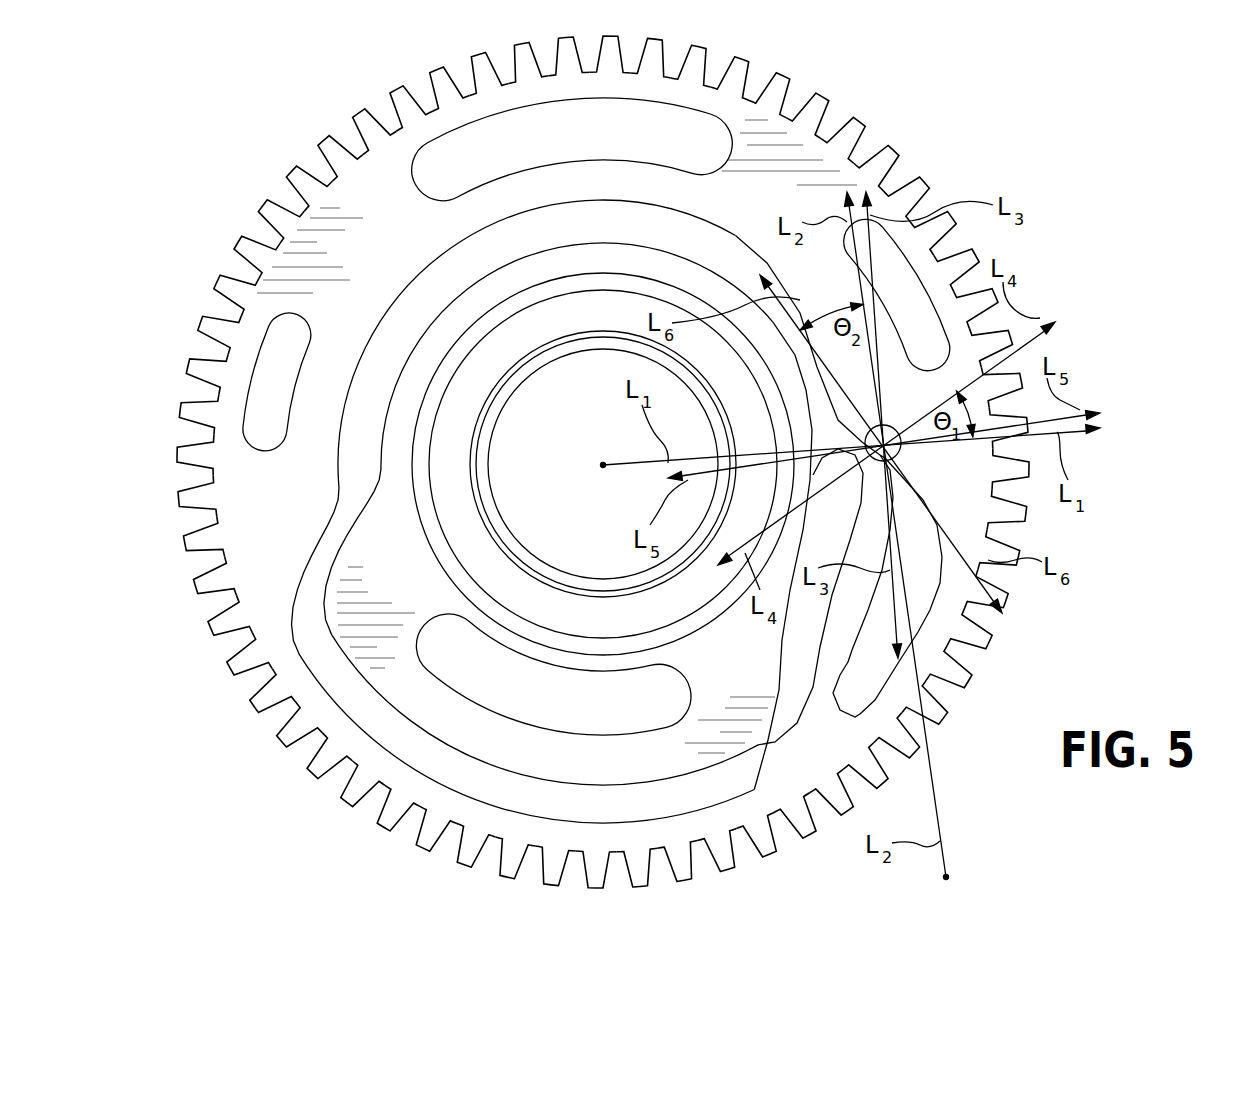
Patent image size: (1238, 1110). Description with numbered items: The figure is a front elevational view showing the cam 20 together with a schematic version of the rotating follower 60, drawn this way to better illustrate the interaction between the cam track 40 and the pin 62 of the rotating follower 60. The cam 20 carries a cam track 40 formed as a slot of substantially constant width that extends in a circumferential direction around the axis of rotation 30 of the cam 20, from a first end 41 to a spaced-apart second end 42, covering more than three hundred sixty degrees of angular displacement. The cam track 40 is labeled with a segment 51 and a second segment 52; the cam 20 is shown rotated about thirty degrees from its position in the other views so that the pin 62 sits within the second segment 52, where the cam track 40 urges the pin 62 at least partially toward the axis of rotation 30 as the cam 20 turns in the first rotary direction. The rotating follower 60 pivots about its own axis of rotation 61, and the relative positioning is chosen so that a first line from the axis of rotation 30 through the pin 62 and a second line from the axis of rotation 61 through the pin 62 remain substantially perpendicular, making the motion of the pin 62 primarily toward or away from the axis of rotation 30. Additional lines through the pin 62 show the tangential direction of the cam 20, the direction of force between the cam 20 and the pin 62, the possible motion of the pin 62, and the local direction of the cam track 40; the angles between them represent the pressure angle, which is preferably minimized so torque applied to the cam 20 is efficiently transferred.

The cam 20 is at (981, 681).
The axis of rotation 30 is at (603, 465).
The cam track 40 is at (777, 685).
The first end 41 is at (855, 697).
The second end 42 is at (827, 467).
The slot / groove 51 is at (857, 636).
The second segment 52 is at (950, 492).
The rotating follower 60 is at (935, 780).
The axis of rotation 61 is at (950, 878).
The pin 62 is at (888, 428).